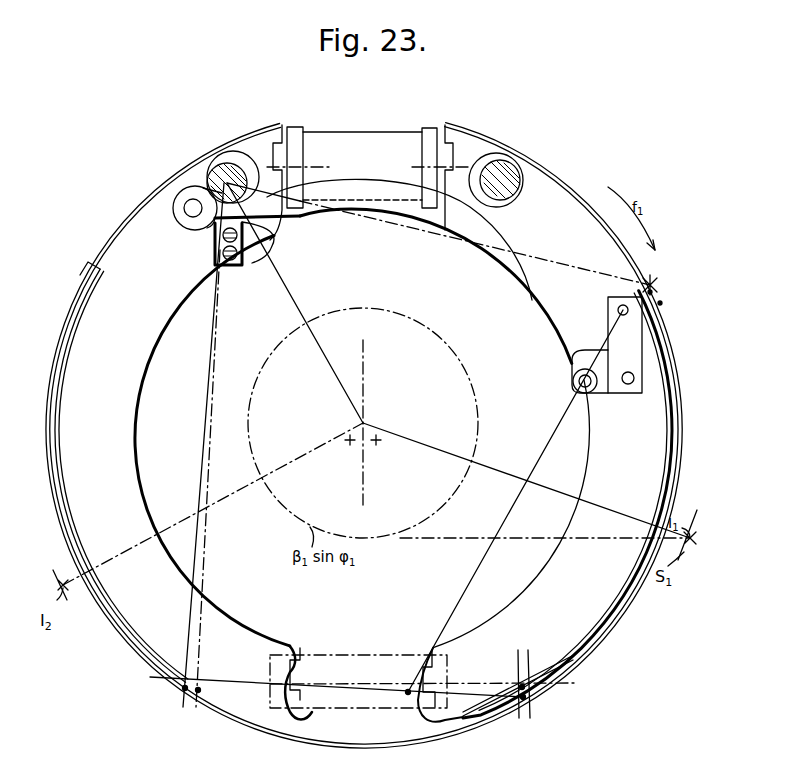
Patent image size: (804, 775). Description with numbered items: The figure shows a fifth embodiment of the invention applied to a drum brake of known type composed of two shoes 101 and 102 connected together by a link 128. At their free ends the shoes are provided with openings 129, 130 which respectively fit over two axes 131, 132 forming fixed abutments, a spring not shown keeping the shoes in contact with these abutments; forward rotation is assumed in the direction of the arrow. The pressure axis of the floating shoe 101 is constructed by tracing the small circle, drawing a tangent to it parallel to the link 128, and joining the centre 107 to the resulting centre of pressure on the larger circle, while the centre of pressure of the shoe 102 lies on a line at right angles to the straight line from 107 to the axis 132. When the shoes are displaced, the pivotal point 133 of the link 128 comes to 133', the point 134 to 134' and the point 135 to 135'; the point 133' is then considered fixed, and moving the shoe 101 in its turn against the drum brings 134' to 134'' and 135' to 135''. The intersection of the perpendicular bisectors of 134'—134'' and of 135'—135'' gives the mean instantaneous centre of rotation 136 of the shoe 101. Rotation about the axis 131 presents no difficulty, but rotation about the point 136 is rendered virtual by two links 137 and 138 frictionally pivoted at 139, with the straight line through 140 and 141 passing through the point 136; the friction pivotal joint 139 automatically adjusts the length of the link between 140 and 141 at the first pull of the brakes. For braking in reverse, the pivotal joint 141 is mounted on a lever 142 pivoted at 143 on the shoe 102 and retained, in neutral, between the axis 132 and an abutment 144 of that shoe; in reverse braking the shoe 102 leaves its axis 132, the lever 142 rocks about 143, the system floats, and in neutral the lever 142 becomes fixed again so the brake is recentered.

The floating shoe 101 is at (622, 483).
The shoe 102 is at (137, 467).
The centre 107 is at (364, 423).
The link 128 is at (333, 707).
The opening 129 is at (240, 152).
The opening 130 is at (488, 152).
The axis 131 is at (513, 177).
The axis 132 is at (227, 180).
The pivotal point 133 is at (211, 710).
The displaced pivotal point 133' is at (162, 702).
The point 134 is at (558, 689).
The displaced point 134' is at (500, 671).
The second displaced point 134'' is at (552, 717).
The point 135 is at (667, 271).
The displaced point 135' is at (673, 282).
The second displaced point 135'' is at (681, 303).
The mean instantaneous centre of rotation 136 is at (408, 693).
The link 137 is at (610, 383).
The link 138 is at (628, 343).
The friction pivotal joint 139 is at (634, 378).
The pivotal joint 140 is at (620, 305).
The pivotal joint 141 is at (583, 386).
The lever 142 is at (432, 215).
The pivot axis 143 is at (180, 203).
The abutment 144 is at (262, 240).